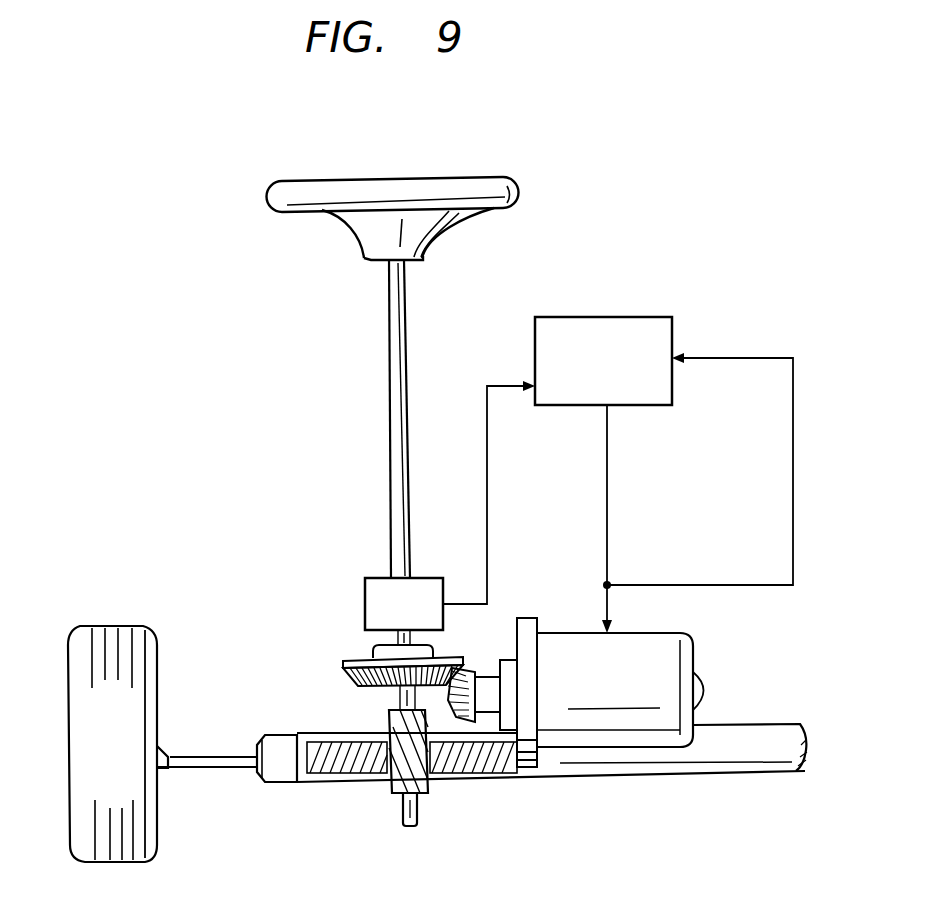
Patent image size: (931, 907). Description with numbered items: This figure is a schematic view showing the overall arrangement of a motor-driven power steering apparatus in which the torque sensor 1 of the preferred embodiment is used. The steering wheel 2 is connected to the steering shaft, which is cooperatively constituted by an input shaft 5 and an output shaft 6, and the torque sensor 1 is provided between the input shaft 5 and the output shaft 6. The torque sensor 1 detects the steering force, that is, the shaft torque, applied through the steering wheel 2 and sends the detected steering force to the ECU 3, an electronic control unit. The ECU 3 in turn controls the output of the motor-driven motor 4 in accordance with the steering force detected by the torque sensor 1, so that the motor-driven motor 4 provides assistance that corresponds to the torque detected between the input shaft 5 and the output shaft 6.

The torque sensor 1 is at (378, 602).
The steering wheel 2 is at (432, 185).
The ECU (electronic control unit) 3 is at (645, 317).
The motor-driven motor 4 is at (673, 650).
The input shaft 5 is at (397, 441).
The output shaft 6 is at (398, 643).